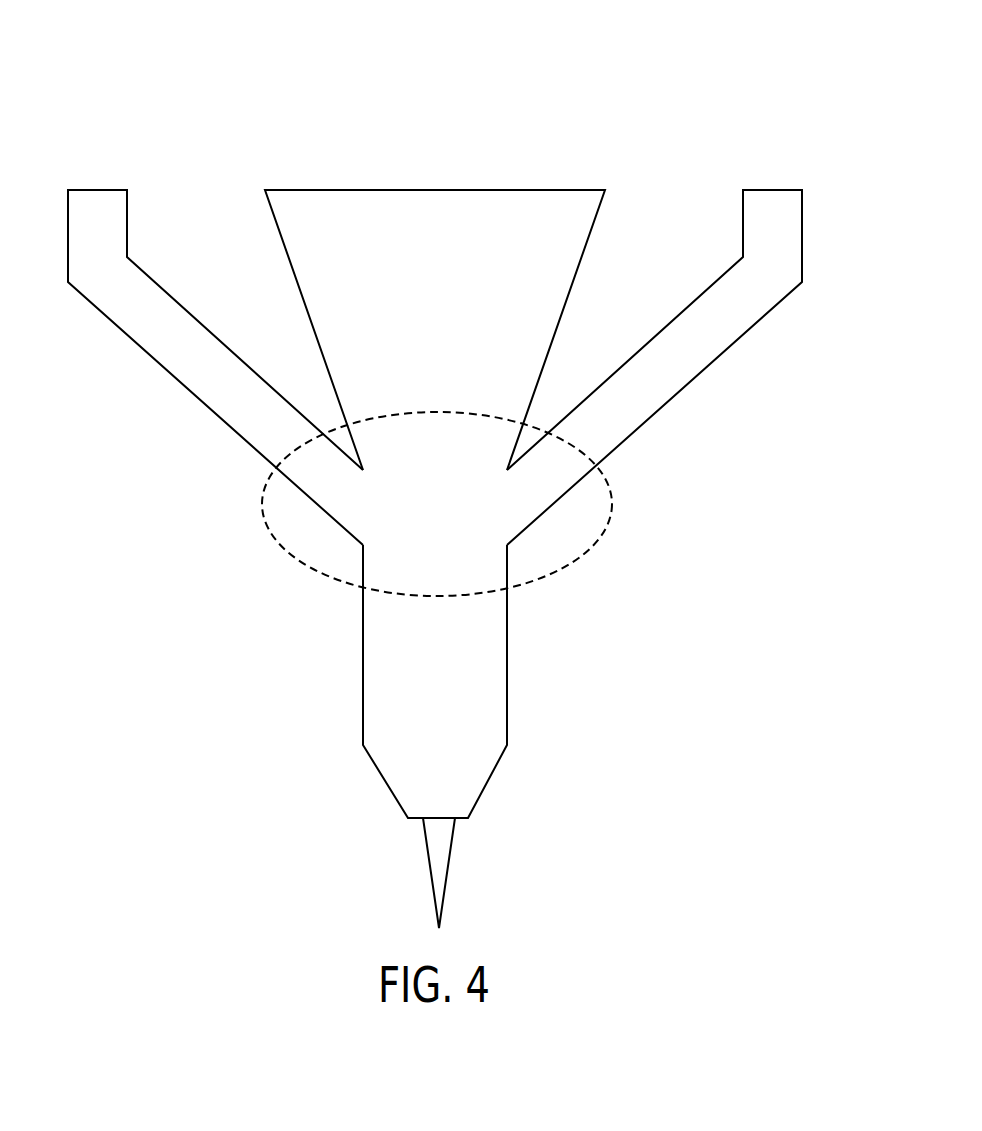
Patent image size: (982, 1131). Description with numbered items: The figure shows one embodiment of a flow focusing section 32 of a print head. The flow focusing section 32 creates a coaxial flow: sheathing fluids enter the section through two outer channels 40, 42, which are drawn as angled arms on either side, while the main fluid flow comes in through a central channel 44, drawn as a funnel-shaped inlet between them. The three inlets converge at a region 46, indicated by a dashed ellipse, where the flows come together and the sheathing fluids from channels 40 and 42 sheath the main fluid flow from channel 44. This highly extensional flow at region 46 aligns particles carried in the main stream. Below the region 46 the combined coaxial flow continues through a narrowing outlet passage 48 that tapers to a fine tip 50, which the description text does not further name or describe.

The flow focusing section 32 is at (769, 88).
The channel 40 is at (773, 190).
The channel 42 is at (100, 190).
The channel 44 is at (440, 190).
The region 46 is at (612, 503).
The tube body 48 is at (508, 650).
The needle tip 50 is at (439, 928).